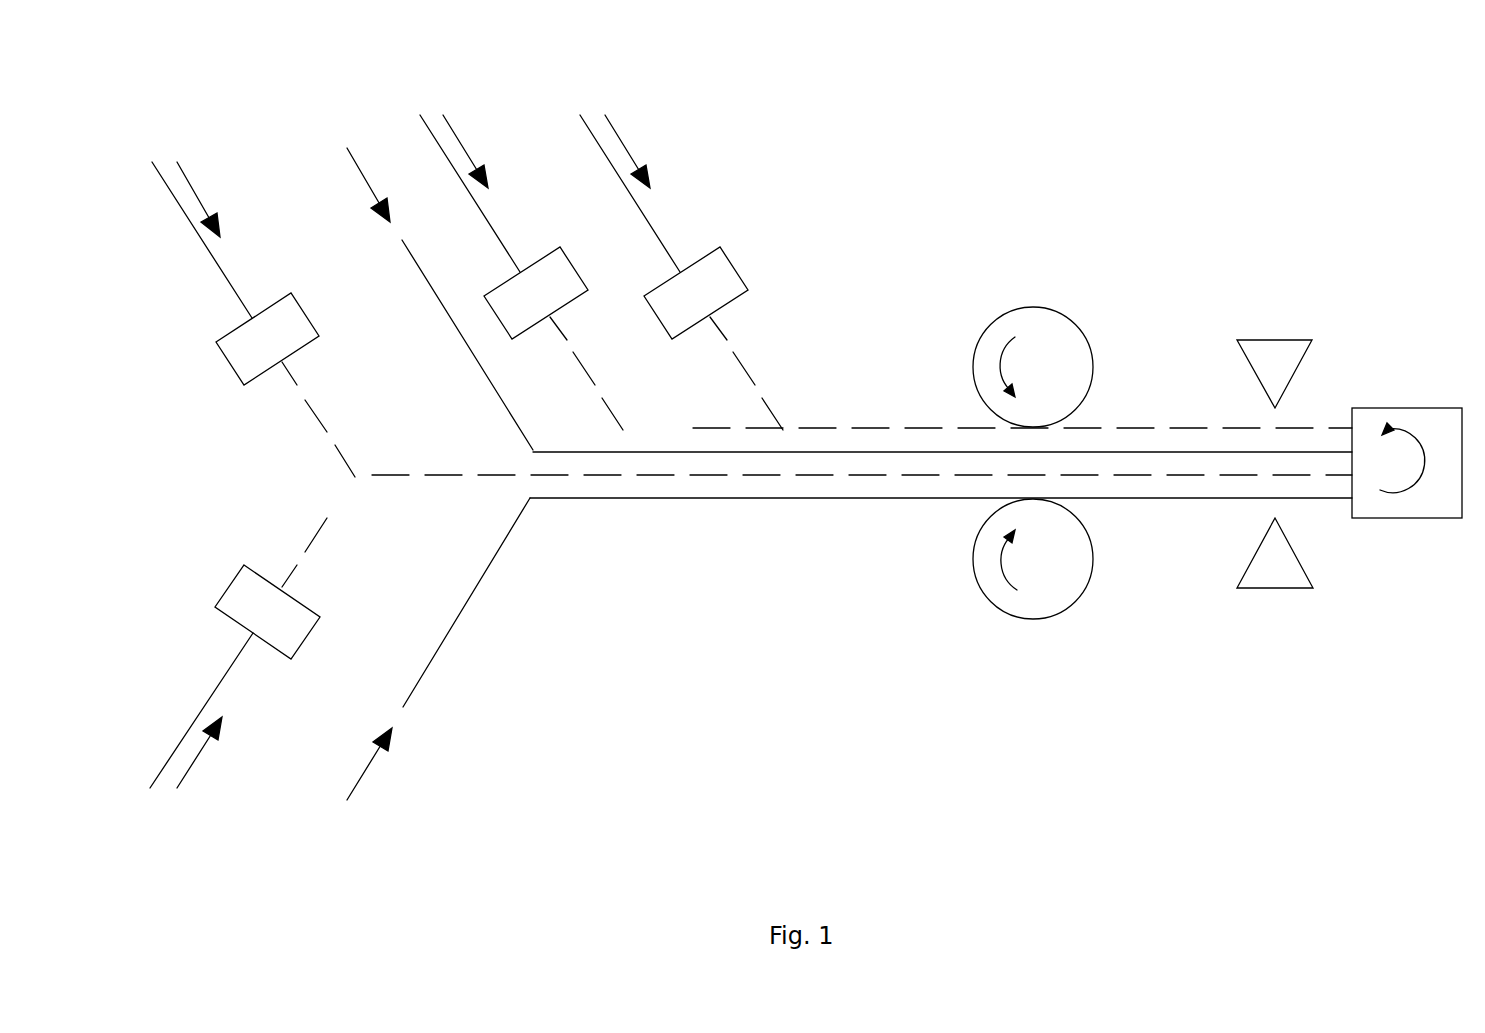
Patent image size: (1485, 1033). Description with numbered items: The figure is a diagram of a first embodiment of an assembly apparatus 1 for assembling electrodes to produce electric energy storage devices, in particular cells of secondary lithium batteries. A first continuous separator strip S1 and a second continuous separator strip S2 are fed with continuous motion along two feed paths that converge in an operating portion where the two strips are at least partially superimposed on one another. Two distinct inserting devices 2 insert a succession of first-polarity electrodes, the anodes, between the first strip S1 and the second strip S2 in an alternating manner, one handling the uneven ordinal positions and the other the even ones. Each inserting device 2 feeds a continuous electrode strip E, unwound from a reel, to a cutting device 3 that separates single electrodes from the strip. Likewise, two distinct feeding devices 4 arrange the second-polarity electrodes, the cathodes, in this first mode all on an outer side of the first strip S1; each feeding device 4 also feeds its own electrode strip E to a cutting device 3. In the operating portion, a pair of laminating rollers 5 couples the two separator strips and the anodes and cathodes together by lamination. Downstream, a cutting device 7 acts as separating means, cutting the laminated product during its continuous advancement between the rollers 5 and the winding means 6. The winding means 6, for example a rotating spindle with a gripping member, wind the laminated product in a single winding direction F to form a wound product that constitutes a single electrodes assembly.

The assembly apparatus 1 is at (1300, 100).
The inserting device 2 is at (223, 140).
The cutting device 3 is at (235, 358).
The feeding device 4 is at (708, 96).
The laminating rollers 5 is at (1057, 322).
The winding means 6 is at (1433, 417).
The cutting device 7 is at (1272, 355).
The continuous electrode strip E is at (430, 137).
The winding direction F is at (1427, 493).
The first continuous separator strip S1 is at (490, 568).
The second continuous separator strip S2 is at (437, 297).